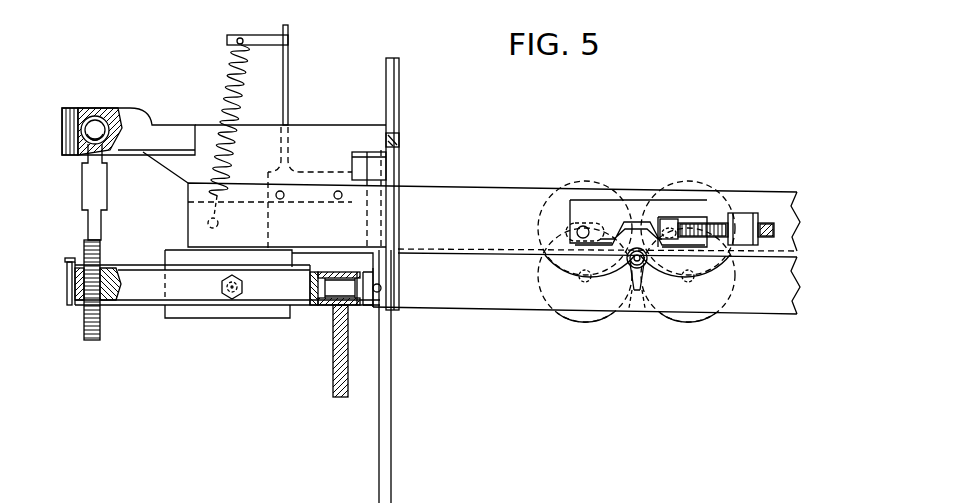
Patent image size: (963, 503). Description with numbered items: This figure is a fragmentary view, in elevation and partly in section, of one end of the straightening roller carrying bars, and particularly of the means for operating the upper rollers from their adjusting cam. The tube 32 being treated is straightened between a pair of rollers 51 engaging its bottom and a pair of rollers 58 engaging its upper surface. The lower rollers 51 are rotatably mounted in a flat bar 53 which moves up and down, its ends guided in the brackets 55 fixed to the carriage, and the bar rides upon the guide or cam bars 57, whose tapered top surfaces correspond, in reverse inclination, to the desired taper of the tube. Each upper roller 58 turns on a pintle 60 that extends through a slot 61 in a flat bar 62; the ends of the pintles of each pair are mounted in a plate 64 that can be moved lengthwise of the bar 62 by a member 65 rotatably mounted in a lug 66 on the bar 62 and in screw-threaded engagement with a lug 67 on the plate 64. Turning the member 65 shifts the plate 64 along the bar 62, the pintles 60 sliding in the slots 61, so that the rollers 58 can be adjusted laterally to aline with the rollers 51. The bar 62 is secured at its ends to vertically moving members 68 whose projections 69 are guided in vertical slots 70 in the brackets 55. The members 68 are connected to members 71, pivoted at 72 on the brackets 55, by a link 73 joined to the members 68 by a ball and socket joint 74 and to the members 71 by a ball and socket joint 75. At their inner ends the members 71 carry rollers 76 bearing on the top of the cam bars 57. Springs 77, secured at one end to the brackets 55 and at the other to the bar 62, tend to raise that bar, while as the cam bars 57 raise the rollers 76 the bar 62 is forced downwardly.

The tube 32 is at (637, 292).
The rollers 51 is at (585, 323).
The flat bar 53 is at (476, 300).
The brackets 55 is at (378, 435).
The guide or cam bars 57 is at (334, 357).
The rollers 58 is at (610, 190).
The pintle 60 is at (576, 224).
The slot 61 is at (598, 215).
The flat bar 62 is at (467, 200).
The plate 64 is at (641, 204).
The member 65 is at (718, 221).
The lug 66 is at (750, 224).
The lug 67 is at (675, 218).
The vertically moving members 68 is at (158, 132).
The projections 69 is at (400, 142).
The vertical slots 70 is at (395, 86).
The members 71 is at (140, 295).
The pivot 72 is at (228, 300).
The link 73 is at (86, 196).
The ball and socket joint 74 is at (95, 120).
The ball and socket joint 75 is at (72, 287).
The rollers 76 is at (326, 308).
The springs 77 is at (232, 70).